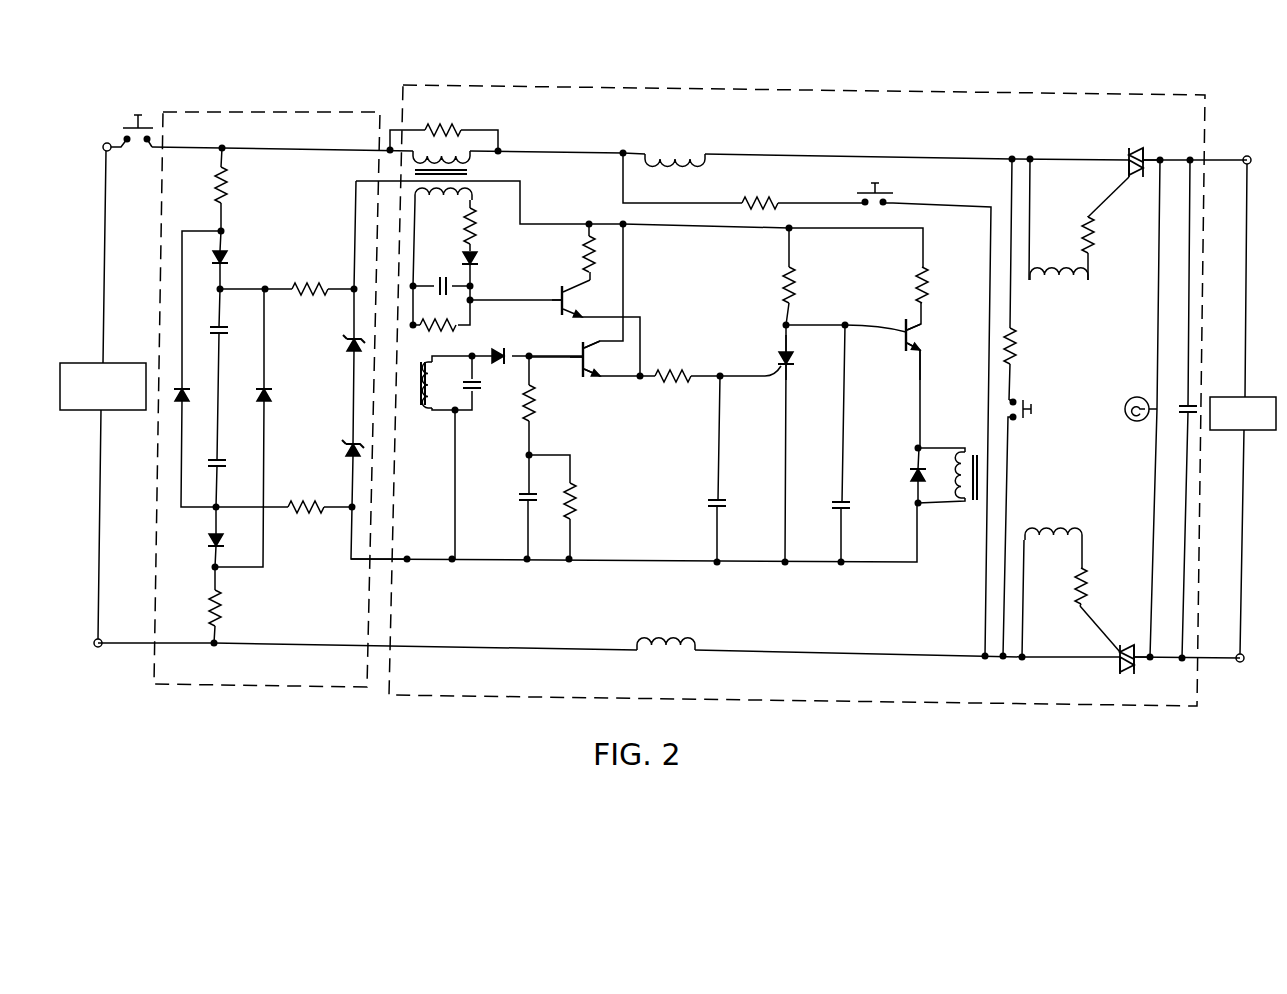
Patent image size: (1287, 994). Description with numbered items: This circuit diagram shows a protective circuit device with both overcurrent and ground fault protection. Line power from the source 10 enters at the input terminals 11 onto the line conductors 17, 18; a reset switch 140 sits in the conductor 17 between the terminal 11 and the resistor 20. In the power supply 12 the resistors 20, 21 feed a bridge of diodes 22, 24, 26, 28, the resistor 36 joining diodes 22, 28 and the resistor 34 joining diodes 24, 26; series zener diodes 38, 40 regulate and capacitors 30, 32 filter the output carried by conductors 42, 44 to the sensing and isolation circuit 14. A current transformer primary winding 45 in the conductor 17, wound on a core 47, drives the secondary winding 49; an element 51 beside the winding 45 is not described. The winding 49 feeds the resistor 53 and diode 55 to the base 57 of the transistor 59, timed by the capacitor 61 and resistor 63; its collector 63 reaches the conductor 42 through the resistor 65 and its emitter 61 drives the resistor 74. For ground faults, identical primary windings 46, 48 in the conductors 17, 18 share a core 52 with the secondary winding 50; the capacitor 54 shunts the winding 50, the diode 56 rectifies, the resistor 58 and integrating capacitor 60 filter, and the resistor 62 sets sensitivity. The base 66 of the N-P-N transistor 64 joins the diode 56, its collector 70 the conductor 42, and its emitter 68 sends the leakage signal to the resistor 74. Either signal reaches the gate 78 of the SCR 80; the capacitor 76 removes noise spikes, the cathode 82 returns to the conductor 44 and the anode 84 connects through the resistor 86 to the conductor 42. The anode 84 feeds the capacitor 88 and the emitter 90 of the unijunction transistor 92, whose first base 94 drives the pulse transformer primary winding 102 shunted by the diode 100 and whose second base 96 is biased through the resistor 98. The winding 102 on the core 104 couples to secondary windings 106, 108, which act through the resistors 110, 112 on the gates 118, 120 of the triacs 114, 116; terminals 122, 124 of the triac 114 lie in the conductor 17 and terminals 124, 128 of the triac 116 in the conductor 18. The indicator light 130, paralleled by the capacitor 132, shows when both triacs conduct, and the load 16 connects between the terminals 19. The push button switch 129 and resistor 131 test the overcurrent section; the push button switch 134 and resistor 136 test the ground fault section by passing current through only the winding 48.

The line power source 10 is at (72, 362).
The input terminal 11 is at (105, 143).
The power supply 12 is at (226, 108).
The sensing and isolation circuit 14 is at (1212, 118).
The load 16 is at (1262, 396).
The line conductor 17 is at (258, 148).
The line conductor 18 is at (253, 645).
The terminal 19 is at (1251, 157).
The resistor 20 is at (229, 192).
The resistor 21 is at (224, 615).
The diode 22 is at (186, 387).
The diode 24 is at (229, 261).
The diode 26 is at (268, 391).
The diode 28 is at (225, 536).
The capacitor 30 is at (222, 456).
The capacitor 32 is at (222, 327).
The resistor 34 is at (310, 283).
The resistor 36 is at (302, 521).
The zener diode 38 is at (343, 348).
The zener diode 40 is at (342, 453).
The conductor 42 is at (688, 226).
The conductor 44 is at (606, 564).
The current transformer primary winding 45 is at (472, 159).
The transformer primary winding 46 is at (678, 152).
The core 47 is at (469, 172).
The transformer primary winding 48 is at (666, 655).
The current transformer secondary winding 49 is at (443, 206).
The secondary winding 50 is at (421, 458).
The resistor 51 is at (463, 126).
The core 52 is at (422, 411).
The resistor 53 is at (479, 229).
The capacitor 54 is at (476, 386).
The diode 55 is at (479, 259).
The diode 56 is at (506, 349).
The base 57 is at (558, 292).
The resistor 58 is at (522, 411).
The transistor 59 is at (559, 314).
The capacitor 60 is at (522, 505).
The capacitor 61 is at (442, 279).
The resistor 62 is at (578, 497).
The resistor 63 is at (445, 329).
The transistor 64 is at (580, 373).
The resistor 65 is at (583, 253).
The base 66 is at (578, 350).
The emitter 68 is at (592, 378).
The collector 70 is at (601, 346).
The resistor 74 is at (680, 372).
The capacitor 76 is at (722, 501).
The gate 78 is at (777, 376).
The silicon controlled rectifier 80 is at (801, 370).
The cathode 82 is at (790, 372).
The anode 84 is at (780, 352).
The resistor 86 is at (796, 287).
The capacitor 88 is at (850, 501).
The emitter 90 is at (901, 341).
The unijunction transistor 92 is at (903, 353).
The first base 94 is at (915, 366).
The second base 96 is at (910, 323).
The resistor 98 is at (931, 284).
The diode 100 is at (912, 487).
The pulse transformer primary winding 102 is at (967, 450).
The core 104 is at (975, 504).
The secondary winding 106 is at (1057, 287).
The secondary winding 108 is at (1057, 536).
The resistor 110 is at (1095, 241).
The resistor 112 is at (1090, 590).
The triac 114 is at (1127, 190).
The triac 116 is at (1130, 642).
The gate 118 is at (1124, 173).
The gate 120 is at (1102, 644).
The terminal 122 is at (1126, 152).
The terminal 124 is at (1147, 158).
The terminal 128 is at (1135, 664).
The momentary push button switch 129 is at (1028, 400).
The indicator light 130 is at (1129, 419).
The resistor 131 is at (1018, 351).
The capacitor 132 is at (1196, 400).
The momentary push button switch 134 is at (886, 192).
The resistor 136 is at (768, 200).
The reset switch 140 is at (142, 104).